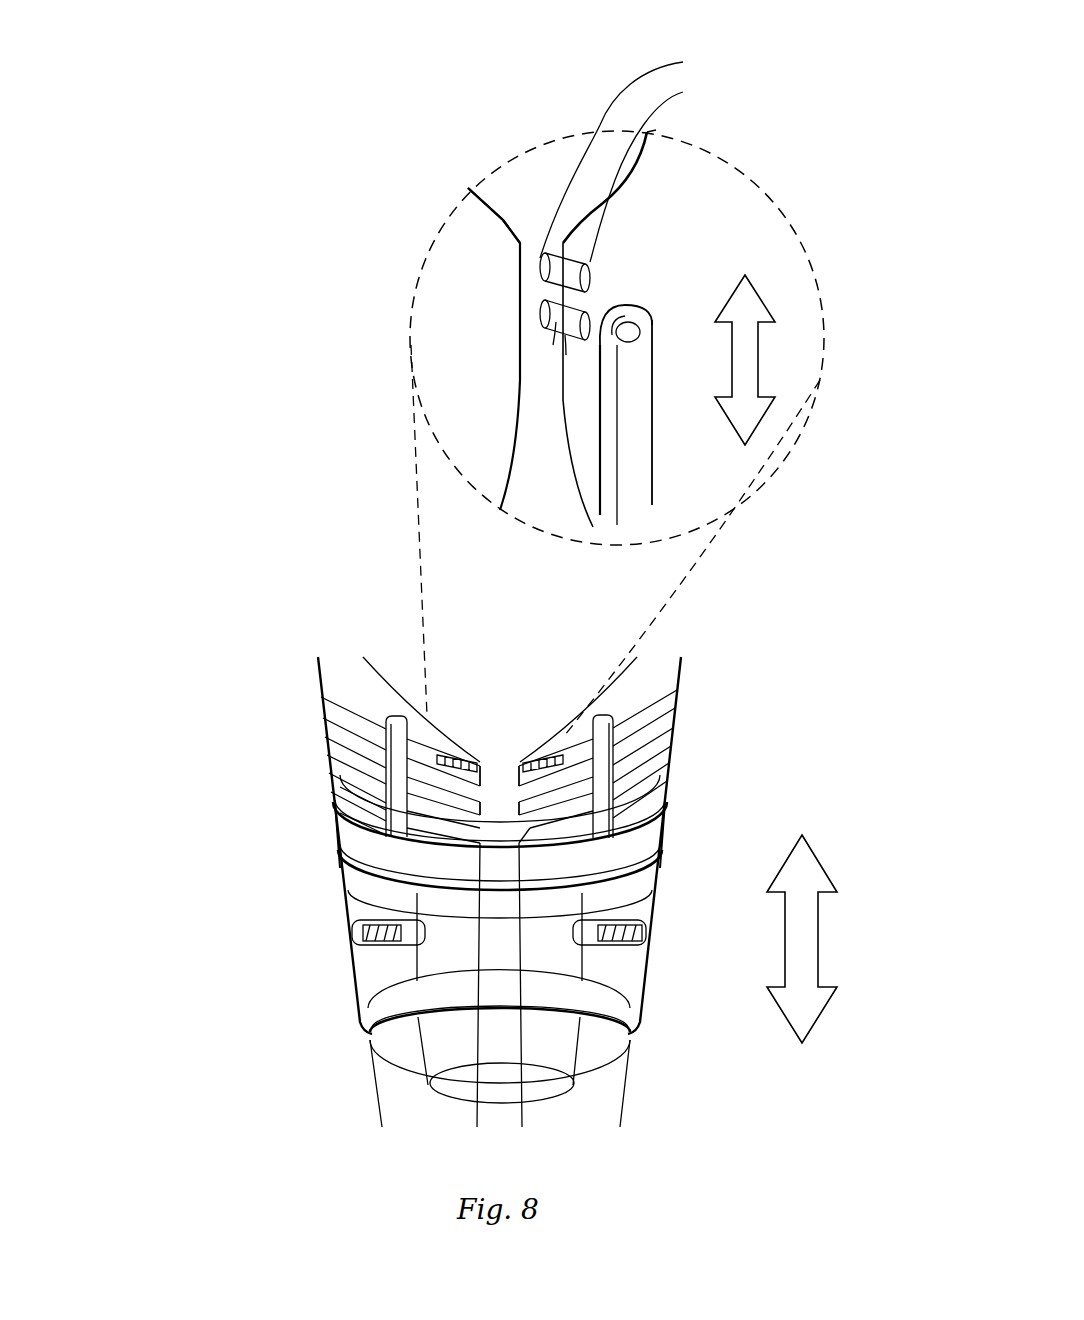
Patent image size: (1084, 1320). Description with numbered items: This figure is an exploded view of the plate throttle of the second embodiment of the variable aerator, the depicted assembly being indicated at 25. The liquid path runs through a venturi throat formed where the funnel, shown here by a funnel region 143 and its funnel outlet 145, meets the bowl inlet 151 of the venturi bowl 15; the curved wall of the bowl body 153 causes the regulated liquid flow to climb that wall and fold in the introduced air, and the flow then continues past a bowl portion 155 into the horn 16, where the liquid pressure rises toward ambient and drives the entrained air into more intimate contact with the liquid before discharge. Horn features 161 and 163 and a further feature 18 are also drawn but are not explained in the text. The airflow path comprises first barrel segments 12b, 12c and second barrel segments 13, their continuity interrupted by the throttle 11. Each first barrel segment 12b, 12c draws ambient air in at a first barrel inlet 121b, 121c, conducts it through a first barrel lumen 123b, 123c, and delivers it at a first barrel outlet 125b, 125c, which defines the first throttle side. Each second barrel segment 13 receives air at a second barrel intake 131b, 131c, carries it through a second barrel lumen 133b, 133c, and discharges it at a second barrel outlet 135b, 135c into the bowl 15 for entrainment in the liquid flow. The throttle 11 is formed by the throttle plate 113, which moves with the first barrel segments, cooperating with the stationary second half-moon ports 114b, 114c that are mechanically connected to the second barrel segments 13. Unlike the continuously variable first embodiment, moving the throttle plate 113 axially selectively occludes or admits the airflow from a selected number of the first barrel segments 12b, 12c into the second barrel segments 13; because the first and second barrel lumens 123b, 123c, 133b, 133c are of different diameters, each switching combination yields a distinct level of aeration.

The hair removal device assembly 25 is at (172, 88).
The throttle 11 is at (742, 412).
The throttle plate 113 is at (647, 323).
The second half-moon port 114b is at (597, 273).
The second half-moon port 114c is at (590, 312).
The second barrel segment 13 is at (714, 157).
The second barrel intake 131b is at (647, 133).
The second barrel lumen 133b is at (660, 172).
The second barrel outlet 135b is at (635, 155).
The second barrel intake 131c is at (566, 355).
The second barrel lumen 133c is at (565, 335).
The second barrel outlet 135c is at (556, 322).
The bowl 15 is at (456, 226).
The flared top portion 143 is at (544, 178).
The funnel outlet 145 is at (544, 221).
The bowl inlet 151 is at (521, 252).
The bowl body 153 is at (521, 284).
The slot 155 is at (518, 326).
The ledge 163 is at (560, 452).
The inner ring 161 is at (500, 985).
The first barrel segment 12b is at (306, 702).
The first barrel segment 12c is at (306, 733).
The first barrel inlet 121b is at (622, 765).
The first barrel lumen 123b is at (618, 755).
The first barrel outlet 125b is at (616, 745).
The first barrel inlet 121c is at (340, 757).
The first barrel lumen 123c is at (340, 787).
The first barrel outlet 125c is at (340, 813).
The slot 18 is at (334, 932).
The horn 16 is at (347, 1041).